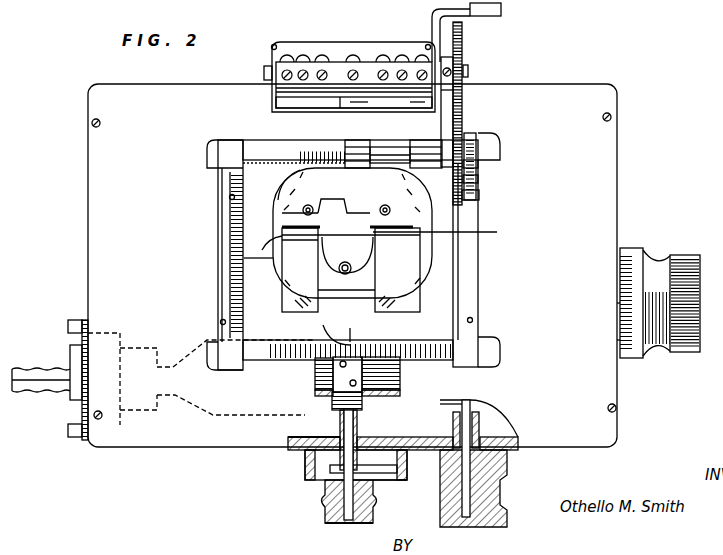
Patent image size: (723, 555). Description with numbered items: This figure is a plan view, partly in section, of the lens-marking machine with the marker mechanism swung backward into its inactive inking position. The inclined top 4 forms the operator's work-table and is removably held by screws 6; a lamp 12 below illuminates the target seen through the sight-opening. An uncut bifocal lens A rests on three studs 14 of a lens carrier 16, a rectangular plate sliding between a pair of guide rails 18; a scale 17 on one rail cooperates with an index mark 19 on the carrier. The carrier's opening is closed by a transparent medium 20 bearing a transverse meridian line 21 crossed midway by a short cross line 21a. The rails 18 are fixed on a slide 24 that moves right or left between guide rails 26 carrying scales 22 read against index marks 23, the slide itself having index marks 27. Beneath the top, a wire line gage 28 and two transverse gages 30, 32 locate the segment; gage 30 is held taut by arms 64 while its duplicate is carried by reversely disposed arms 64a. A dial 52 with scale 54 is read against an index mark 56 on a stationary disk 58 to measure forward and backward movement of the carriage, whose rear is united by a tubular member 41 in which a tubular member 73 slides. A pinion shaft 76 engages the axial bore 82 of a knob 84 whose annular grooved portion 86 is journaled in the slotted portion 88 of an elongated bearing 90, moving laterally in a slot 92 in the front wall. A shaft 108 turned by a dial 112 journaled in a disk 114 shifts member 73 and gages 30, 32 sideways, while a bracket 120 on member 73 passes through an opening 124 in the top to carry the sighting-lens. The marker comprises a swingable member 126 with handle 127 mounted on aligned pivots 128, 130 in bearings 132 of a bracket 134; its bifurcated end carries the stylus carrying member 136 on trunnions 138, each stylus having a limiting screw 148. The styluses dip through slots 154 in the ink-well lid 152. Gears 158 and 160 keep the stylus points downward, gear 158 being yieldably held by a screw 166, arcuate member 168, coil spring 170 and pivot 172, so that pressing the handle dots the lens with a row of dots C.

The inclined top 4 is at (600, 143).
The screws 6 is at (612, 117).
The lamp 12 is at (207, 418).
The studs 14 is at (385, 205).
The lens carrier 16 is at (229, 197).
The scale 17 is at (230, 232).
The guide rails 18 is at (220, 264).
The index mark 19 is at (248, 257).
The transparent medium 20 is at (285, 302).
The transverse line 21 is at (310, 222).
The cross line 21a is at (346, 220).
The scales 22 is at (300, 153).
The index marks 23 is at (352, 325).
The slide 24 is at (424, 342).
The guide rails 26 is at (210, 142).
The index marks 27 is at (323, 332).
The line gage 28 is at (300, 254).
The line gage 30 is at (320, 279).
The line gage 32 is at (378, 285).
The tubular member 41 is at (385, 396).
The dial 52 is at (688, 255).
The scale 54 is at (640, 360).
The index mark 56 is at (622, 306).
The stationary disk 58 is at (622, 248).
The arms 64 is at (266, 255).
The arms 64a is at (448, 238).
The tubular member 73 is at (400, 376).
The shaft 76 is at (358, 423).
The axial bore 82 is at (350, 522).
The knob 84 is at (325, 520).
The annular grooved portion 86 is at (325, 490).
The slotted portion 88 is at (386, 481).
The elongated bearing 90 is at (305, 468).
The slot 92 is at (331, 447).
The shaft 108 is at (482, 401).
The dial 112 is at (507, 473).
The disk 114 is at (507, 458).
The bracket 120 is at (318, 379).
The opening 124 is at (333, 400).
The swingable member 126 is at (368, 141).
The handle 127 is at (502, 8).
The pivot 128 is at (341, 148).
The pivot 130 is at (420, 145).
The bearings 132 is at (427, 163).
The bracket 134 is at (372, 150).
The stylus carrying member 136 is at (312, 68).
The trunnions 138 is at (264, 72).
The screw 148 is at (283, 75).
The removable lid 152 is at (340, 50).
The slots 154 is at (383, 57).
The gear 158 is at (480, 196).
The gear 160 is at (464, 35).
The screw 166 is at (478, 160).
The arcuate member 168 is at (479, 140).
The coil spring 170 is at (479, 172).
The pivot 172 is at (479, 184).
The bifocal lens A is at (278, 184).
The row of dots C is at (413, 222).